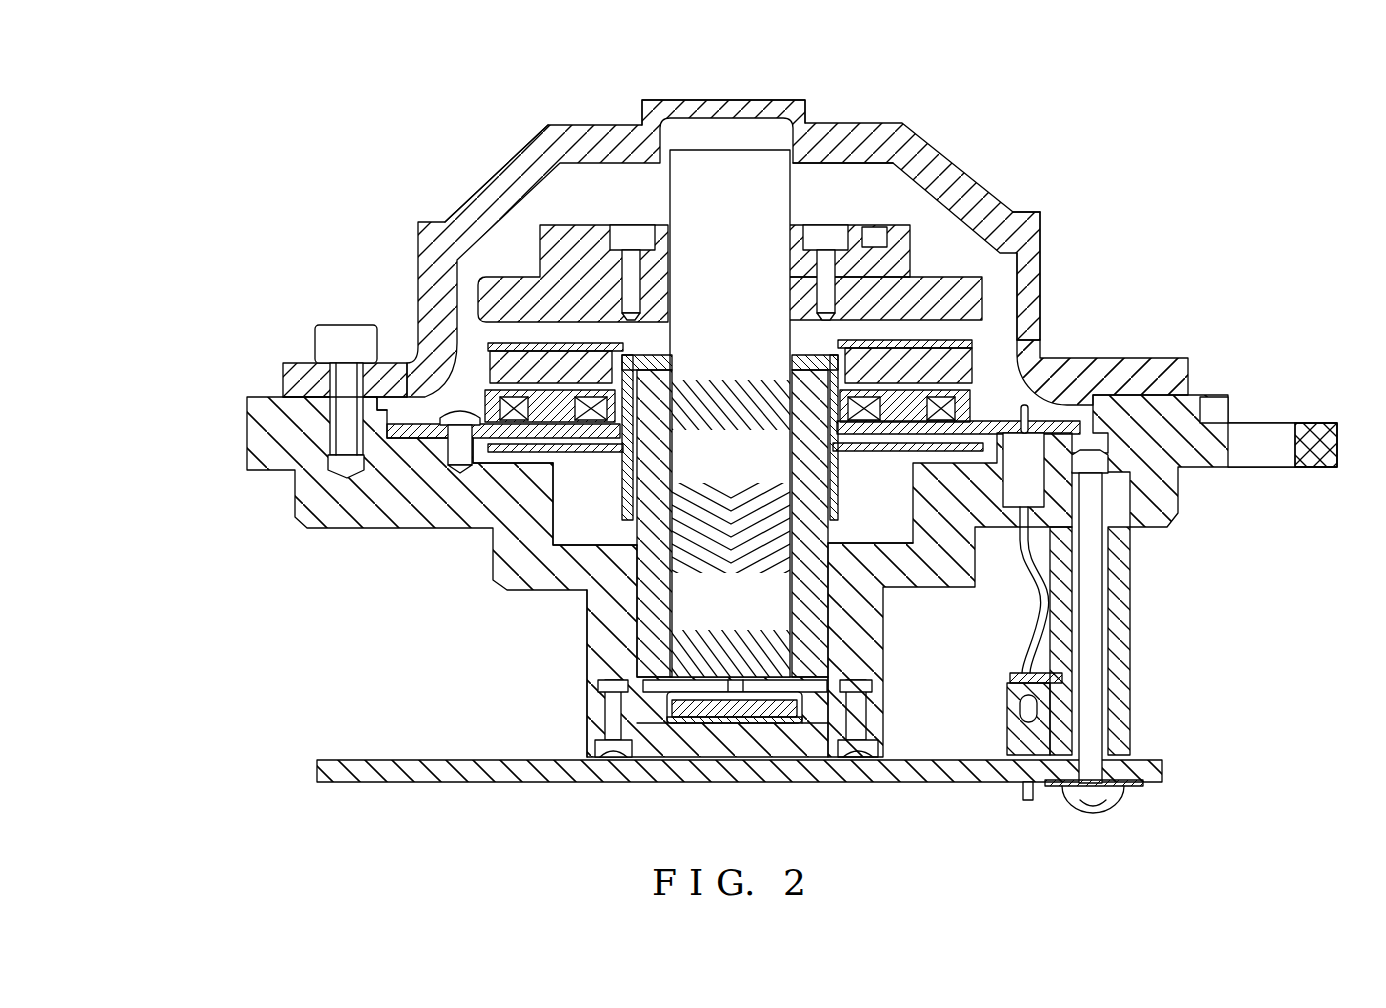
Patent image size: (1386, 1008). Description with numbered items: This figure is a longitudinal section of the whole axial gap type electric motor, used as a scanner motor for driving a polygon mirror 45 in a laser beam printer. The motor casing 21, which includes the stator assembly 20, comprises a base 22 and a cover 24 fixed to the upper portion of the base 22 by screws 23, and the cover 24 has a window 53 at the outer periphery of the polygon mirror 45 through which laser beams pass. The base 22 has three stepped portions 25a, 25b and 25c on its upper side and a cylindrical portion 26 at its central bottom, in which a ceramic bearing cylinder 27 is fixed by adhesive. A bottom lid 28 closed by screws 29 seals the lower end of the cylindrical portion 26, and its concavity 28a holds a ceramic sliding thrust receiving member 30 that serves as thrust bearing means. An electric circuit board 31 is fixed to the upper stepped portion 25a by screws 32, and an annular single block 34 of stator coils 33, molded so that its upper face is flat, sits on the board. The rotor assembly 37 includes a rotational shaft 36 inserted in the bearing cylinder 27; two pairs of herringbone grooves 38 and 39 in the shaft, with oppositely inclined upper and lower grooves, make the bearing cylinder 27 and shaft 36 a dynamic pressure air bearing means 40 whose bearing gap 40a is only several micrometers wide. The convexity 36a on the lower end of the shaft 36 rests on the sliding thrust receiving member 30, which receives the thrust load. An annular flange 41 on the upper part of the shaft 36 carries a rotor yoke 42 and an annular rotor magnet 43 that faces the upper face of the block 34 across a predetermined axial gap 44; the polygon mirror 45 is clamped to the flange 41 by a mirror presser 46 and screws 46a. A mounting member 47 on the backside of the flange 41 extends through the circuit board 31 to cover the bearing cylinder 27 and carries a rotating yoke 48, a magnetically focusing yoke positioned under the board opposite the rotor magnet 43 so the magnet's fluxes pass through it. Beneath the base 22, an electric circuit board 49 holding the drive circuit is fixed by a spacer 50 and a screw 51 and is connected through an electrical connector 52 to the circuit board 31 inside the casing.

The stator assembly 20 is at (507, 509).
The motor casing 21 is at (276, 356).
The base 22 is at (333, 530).
The screws 23 is at (338, 330).
The cover 24 is at (493, 177).
The upper stepped portion 25a is at (403, 440).
The stepped portion 25b is at (490, 463).
The stepped portion 25c is at (578, 540).
The cylindrical portion 26 is at (587, 675).
The bearing cylinder 27 is at (823, 635).
The bottom lid 28 is at (657, 757).
The concavity 28a is at (725, 724).
The screws 29 is at (608, 765).
The sliding thrust receiving member 30 is at (717, 715).
The electric circuit board 31 is at (405, 398).
The screws 32 is at (450, 470).
The stator coils 33 is at (1045, 360).
The annular single block 34 is at (1040, 292).
The rotational shaft 36 is at (822, 155).
The convexity 36a is at (778, 690).
The rotor assembly 37 is at (835, 235).
The herringbone grooves 38 is at (739, 373).
The herringbone grooves 39 is at (777, 722).
The dynamic pressure air bearing means 40 is at (840, 530).
The bearing gap 40a is at (806, 578).
The annular flange 41 is at (668, 310).
The rotor yoke 42 is at (460, 265).
The annular rotor magnet 43 is at (480, 318).
The axial gap 44 is at (488, 360).
The polygon mirror 45 is at (965, 272).
The mirror presser 46 is at (922, 224).
The screws 46a is at (815, 202).
The mounting member 47 is at (674, 360).
The rotating yoke 48 is at (527, 455).
The electric circuit board 49 is at (952, 775).
The spacer 50 is at (1132, 652).
The screw 51 is at (1123, 797).
The electrical connector 52 is at (1040, 752).
The window 53 is at (1040, 248).